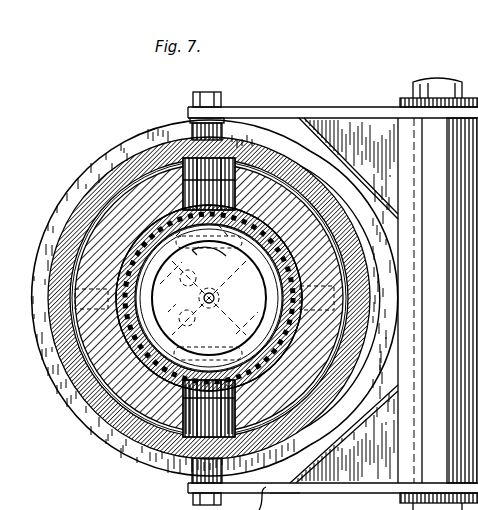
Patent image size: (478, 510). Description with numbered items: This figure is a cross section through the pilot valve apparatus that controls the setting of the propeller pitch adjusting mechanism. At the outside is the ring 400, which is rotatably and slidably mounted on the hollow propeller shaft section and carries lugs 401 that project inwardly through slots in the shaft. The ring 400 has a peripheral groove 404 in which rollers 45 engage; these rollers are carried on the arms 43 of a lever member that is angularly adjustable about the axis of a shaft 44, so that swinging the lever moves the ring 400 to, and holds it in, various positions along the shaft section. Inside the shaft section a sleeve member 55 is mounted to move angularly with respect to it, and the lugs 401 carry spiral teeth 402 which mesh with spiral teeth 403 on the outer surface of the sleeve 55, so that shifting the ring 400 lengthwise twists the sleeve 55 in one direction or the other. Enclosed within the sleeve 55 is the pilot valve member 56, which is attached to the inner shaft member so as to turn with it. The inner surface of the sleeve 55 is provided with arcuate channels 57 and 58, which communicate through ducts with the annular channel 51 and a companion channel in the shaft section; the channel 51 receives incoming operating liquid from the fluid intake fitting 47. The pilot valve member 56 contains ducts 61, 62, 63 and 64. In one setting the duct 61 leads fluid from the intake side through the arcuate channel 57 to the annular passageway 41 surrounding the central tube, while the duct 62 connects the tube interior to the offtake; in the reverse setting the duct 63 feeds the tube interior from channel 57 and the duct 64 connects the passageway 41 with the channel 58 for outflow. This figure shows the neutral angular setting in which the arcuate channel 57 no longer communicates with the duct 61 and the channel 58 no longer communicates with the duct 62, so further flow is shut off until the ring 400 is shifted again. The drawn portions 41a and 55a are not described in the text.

The ring 400 is at (118, 161).
The lugs 401 is at (150, 152).
The peripheral groove 404 is at (88, 174).
The rollers 45 is at (190, 122).
The arms 43 is at (293, 107).
The shaft 44 is at (413, 86).
The spiral teeth 403 is at (182, 192).
The spiral teeth 402 is at (240, 200).
The arcuate channel 57 is at (270, 218).
The duct 61 is at (192, 266).
The duct 62 is at (208, 335).
The duct 63 is at (209, 287).
The duct 64 is at (167, 300).
The sleeve member 55 is at (72, 367).
The pilot valve member 56 is at (105, 380).
The arcuate channel 58 is at (128, 405).
The annular passageway 41 is at (140, 428).
The boss left portion 41a is at (182, 395).
The boss right portion 55a is at (238, 394).
The fluid intake fitting 47 is at (250, 498).
The annular channel 51 is at (285, 501).